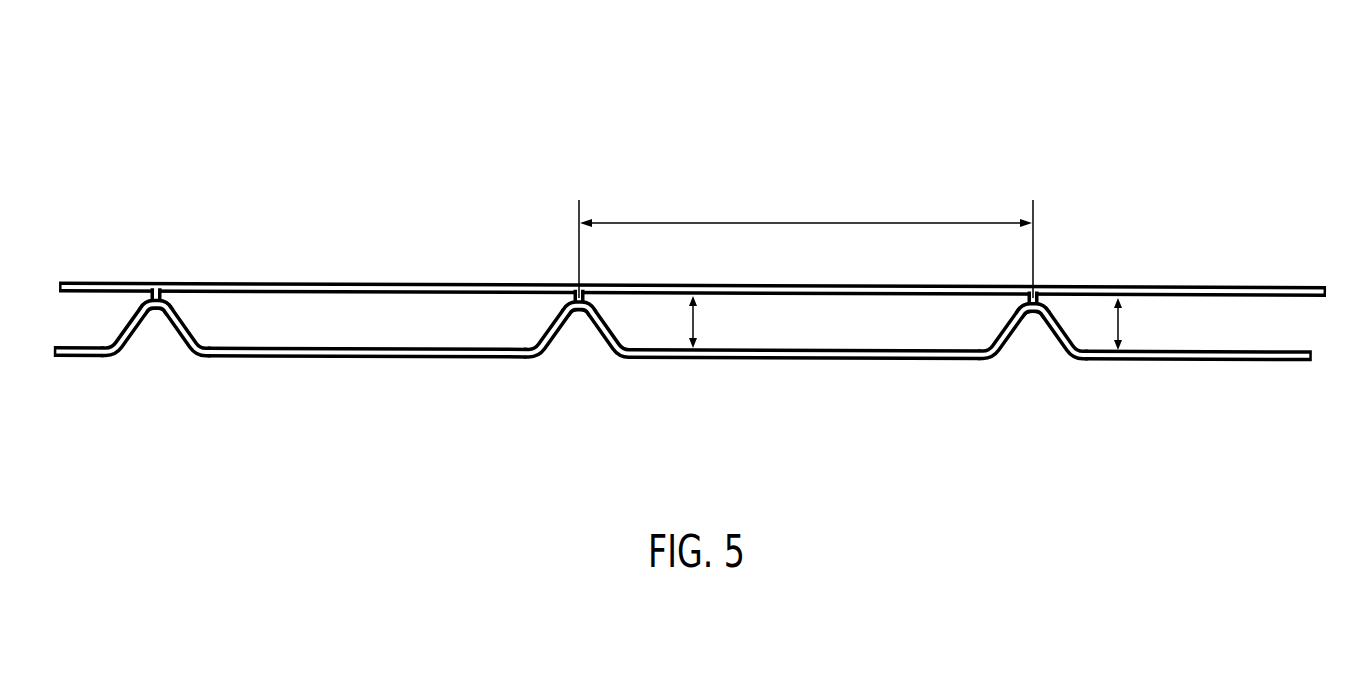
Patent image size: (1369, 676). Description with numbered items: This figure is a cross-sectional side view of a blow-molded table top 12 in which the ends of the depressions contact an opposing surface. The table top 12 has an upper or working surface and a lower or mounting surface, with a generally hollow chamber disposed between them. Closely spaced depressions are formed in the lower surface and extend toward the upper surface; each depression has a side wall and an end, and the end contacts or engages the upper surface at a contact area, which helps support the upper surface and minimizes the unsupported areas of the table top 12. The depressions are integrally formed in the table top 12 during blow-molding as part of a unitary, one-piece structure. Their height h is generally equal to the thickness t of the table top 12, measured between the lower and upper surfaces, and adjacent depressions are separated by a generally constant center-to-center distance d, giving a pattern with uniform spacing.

The table top 12 is at (1222, 112).